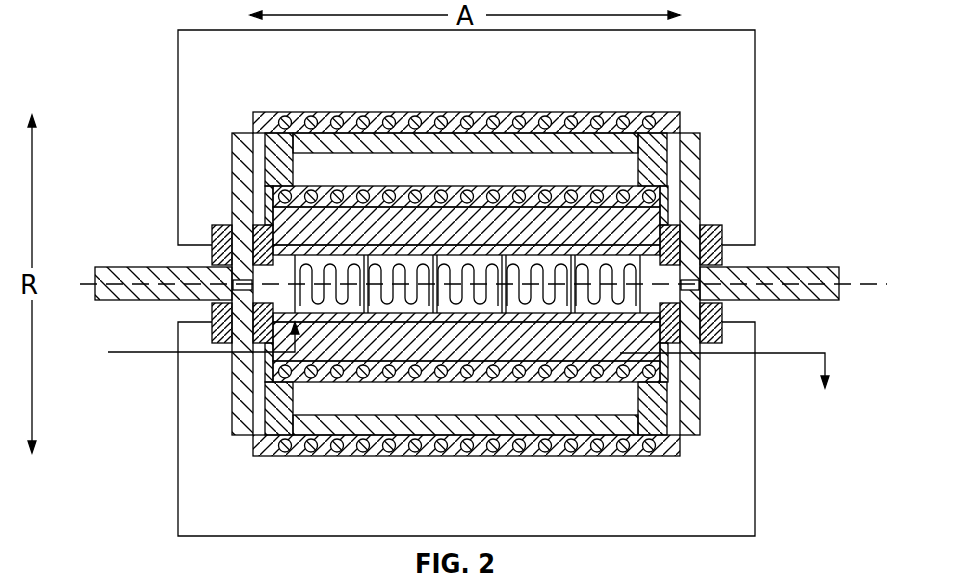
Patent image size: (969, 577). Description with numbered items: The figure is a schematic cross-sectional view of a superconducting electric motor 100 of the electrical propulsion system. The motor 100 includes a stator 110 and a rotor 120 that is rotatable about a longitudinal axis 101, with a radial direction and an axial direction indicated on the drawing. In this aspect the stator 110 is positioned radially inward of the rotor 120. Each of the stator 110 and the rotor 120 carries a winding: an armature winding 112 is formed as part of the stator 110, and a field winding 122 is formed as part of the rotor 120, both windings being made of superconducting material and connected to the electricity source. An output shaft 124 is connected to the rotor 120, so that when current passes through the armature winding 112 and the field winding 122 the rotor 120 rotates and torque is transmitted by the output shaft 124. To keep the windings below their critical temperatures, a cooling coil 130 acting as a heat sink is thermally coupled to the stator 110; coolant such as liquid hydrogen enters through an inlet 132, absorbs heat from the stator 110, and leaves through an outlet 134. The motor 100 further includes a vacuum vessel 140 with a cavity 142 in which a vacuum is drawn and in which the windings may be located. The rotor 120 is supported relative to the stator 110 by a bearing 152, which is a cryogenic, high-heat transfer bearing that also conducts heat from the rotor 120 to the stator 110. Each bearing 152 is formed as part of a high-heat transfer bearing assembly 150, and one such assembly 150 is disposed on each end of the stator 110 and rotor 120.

The motor 100 is at (487, 294).
The longitudinal axis 101 is at (852, 284).
The stator 110 is at (665, 198).
The armature winding 112 is at (243, 205).
The rotor 120 is at (655, 162).
The field winding 122 is at (280, 125).
The output shaft 124 is at (122, 266).
The cooling coil 130 is at (684, 222).
The inlet 132 is at (128, 352).
The outlet 134 is at (798, 353).
The vacuum vessel 140 is at (426, 296).
The cavity 142 is at (247, 90).
The high-heat transfer bearing assembly 150 is at (302, 165).
The bearing 152 is at (280, 158).